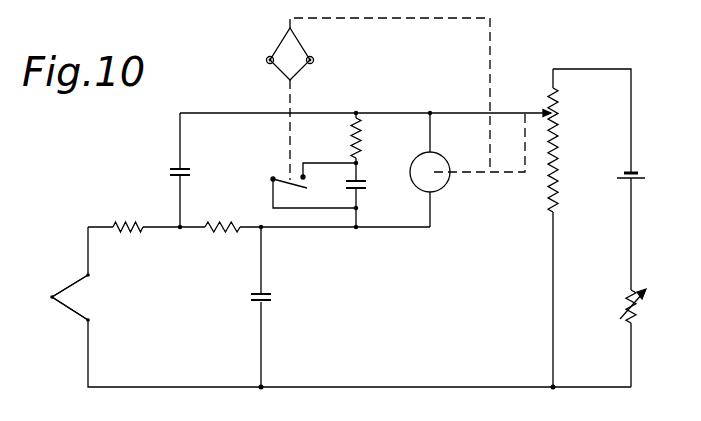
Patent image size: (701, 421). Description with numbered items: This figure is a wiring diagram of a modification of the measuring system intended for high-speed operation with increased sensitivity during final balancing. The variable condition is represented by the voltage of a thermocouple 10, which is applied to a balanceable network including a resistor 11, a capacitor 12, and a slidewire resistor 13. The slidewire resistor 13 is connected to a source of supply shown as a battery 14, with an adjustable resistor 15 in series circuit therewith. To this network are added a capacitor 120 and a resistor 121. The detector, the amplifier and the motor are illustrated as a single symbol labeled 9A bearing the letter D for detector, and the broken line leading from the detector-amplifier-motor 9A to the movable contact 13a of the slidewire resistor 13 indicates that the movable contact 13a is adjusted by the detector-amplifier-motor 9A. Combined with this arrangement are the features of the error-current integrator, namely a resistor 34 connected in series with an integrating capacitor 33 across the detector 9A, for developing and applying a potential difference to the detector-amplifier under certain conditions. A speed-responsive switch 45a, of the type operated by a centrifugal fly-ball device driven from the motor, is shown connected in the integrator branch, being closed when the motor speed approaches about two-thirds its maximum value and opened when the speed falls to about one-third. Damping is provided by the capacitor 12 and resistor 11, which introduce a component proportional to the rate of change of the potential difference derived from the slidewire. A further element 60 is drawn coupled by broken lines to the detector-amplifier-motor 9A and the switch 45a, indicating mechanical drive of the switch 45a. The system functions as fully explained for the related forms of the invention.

The thermocouple 10 is at (66, 309).
The resistor 11 is at (138, 234).
The capacitor 12 is at (275, 301).
The slidewire resistor 13 is at (560, 195).
The movable contact 13a is at (546, 113).
The battery 14 is at (642, 173).
The adjustable resistor 15 is at (640, 313).
The integrating capacitor 33 is at (367, 188).
The resistor 34 is at (362, 148).
The switch 45a is at (282, 183).
The motor 60 is at (278, 50).
The detector-amplifier-motor 9A is at (445, 186).
The capacitor 120 is at (168, 171).
The resistor 121 is at (223, 234).